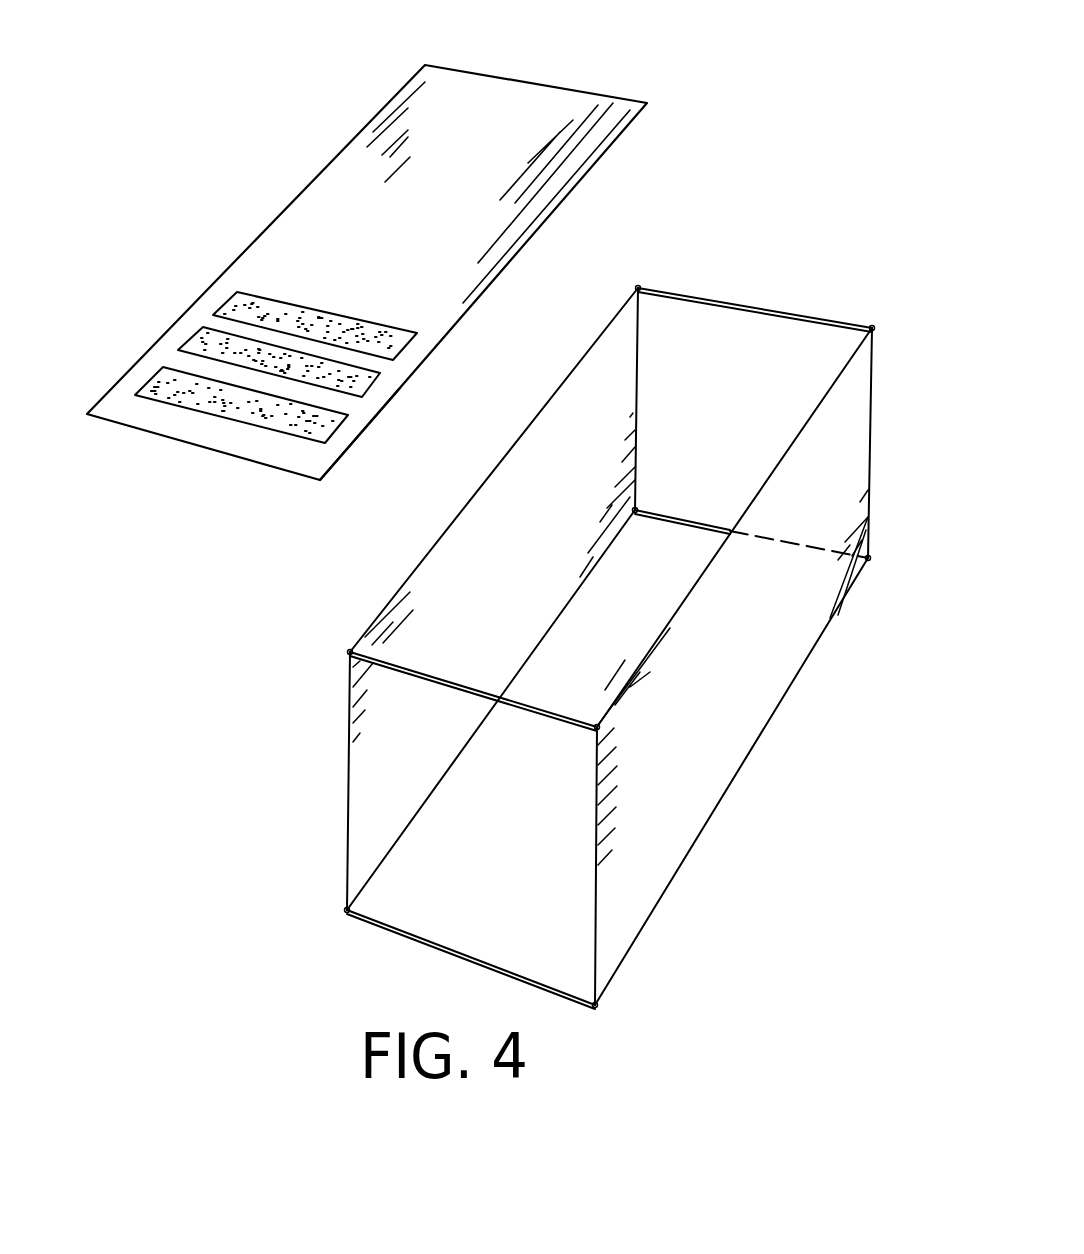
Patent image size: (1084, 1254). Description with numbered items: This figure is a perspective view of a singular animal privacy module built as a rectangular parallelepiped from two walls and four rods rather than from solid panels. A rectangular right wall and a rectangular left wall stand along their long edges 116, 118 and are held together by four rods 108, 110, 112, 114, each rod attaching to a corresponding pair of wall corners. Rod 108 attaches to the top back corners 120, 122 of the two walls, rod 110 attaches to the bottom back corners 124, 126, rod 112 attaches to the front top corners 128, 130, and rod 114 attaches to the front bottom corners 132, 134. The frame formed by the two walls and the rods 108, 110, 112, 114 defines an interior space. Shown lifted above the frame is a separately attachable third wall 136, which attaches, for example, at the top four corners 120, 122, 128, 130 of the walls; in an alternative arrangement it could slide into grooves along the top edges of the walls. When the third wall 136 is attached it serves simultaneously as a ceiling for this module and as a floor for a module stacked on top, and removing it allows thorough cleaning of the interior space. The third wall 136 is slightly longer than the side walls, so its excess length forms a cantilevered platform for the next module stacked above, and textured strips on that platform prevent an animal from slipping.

The third wall 136 is at (540, 97).
The rod 108 is at (695, 290).
The rod 110 is at (702, 518).
The rod 112 is at (487, 693).
The rod 114 is at (422, 947).
The long edge 116 is at (690, 852).
The long edge 118 is at (442, 782).
The top back corner 120 is at (874, 326).
The top back corner 122 is at (638, 288).
The bottom back corner 124 is at (870, 558).
The bottom back corner 126 is at (637, 508).
The front top corner 128 is at (600, 727).
The front top corner 130 is at (350, 652).
The front bottom corner 132 is at (595, 1005).
The front bottom corner 134 is at (347, 910).